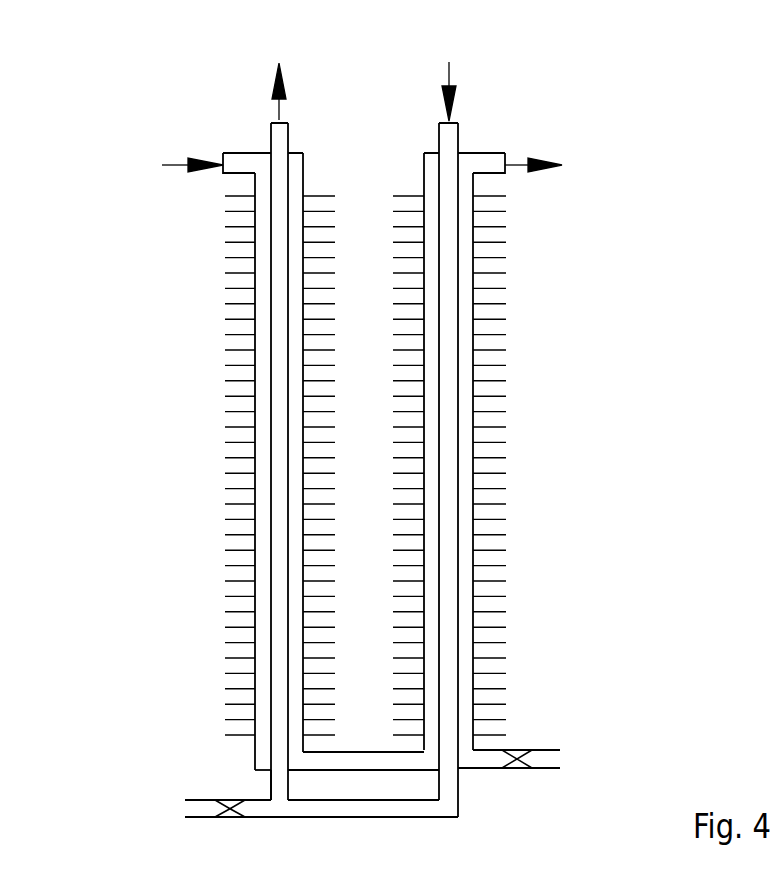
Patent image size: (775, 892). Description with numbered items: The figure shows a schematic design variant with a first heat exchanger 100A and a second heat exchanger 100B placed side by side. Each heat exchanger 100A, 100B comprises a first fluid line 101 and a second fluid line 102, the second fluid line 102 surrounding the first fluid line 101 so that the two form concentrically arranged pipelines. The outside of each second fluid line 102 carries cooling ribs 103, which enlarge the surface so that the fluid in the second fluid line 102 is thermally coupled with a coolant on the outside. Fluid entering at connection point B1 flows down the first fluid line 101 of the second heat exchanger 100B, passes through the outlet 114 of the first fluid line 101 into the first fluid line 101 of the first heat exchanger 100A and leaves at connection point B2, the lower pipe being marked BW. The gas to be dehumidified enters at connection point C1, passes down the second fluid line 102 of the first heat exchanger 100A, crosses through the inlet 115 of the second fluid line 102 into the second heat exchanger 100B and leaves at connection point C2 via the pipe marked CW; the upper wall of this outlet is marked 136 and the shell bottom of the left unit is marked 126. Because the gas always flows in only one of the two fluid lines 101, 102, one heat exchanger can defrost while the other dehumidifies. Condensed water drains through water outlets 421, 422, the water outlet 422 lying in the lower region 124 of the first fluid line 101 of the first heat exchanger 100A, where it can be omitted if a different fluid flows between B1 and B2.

The first heat exchanger 100A is at (197, 225).
The second heat exchanger 100B is at (540, 215).
The first fluid line 101 is at (268, 323).
The second fluid line 102 is at (255, 450).
The cooling ribs 103 is at (503, 317).
The outlet of the first fluid line 114 is at (462, 787).
The inlet of the second fluid line 115 is at (475, 745).
The lower region of the first fluid line 124 is at (278, 789).
The shell bottom wall 126 is at (263, 750).
The outlet header wall 136 is at (480, 152).
The water outlet 421 is at (517, 776).
The water outlet 422 is at (225, 822).
The connection point B1 is at (442, 70).
The connection point B2 is at (273, 70).
The connection point C1 is at (167, 162).
The connection point C2 is at (558, 167).
The first fluid pipe BW is at (199, 812).
The second fluid pipe CW is at (538, 758).